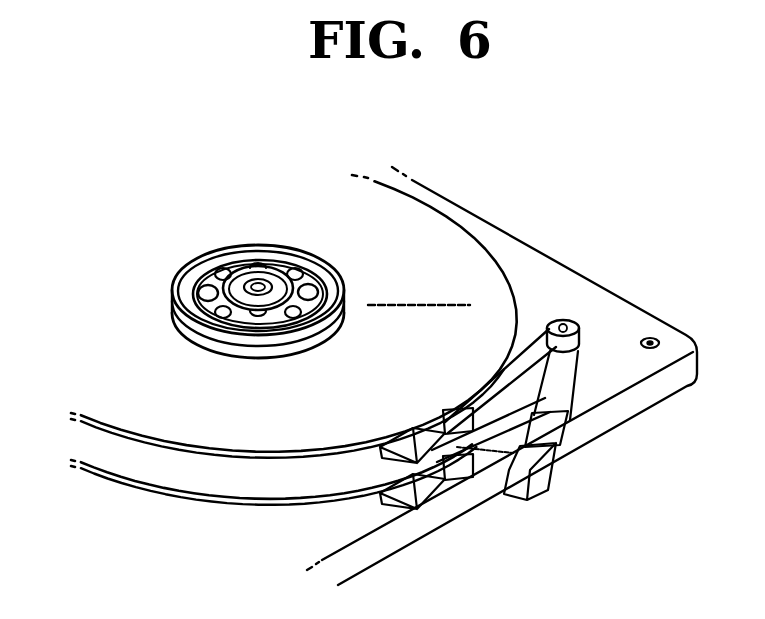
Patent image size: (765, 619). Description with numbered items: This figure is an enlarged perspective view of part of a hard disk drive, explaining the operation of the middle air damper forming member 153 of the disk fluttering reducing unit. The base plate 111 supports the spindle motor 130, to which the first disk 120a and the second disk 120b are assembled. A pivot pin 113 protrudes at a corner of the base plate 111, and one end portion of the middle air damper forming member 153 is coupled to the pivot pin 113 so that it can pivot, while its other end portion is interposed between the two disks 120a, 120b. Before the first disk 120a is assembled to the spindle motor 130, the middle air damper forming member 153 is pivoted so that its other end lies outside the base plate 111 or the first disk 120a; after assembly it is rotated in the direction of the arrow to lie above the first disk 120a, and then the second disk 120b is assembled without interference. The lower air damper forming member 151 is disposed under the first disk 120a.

The base plate 111 is at (603, 427).
The pivot pin 113 is at (564, 322).
The first disk 120a is at (185, 475).
The second disk 120b is at (447, 233).
The spindle motor 130 is at (181, 283).
The lower air damper forming member 151 is at (427, 490).
The middle air damper forming member 153 is at (463, 397).